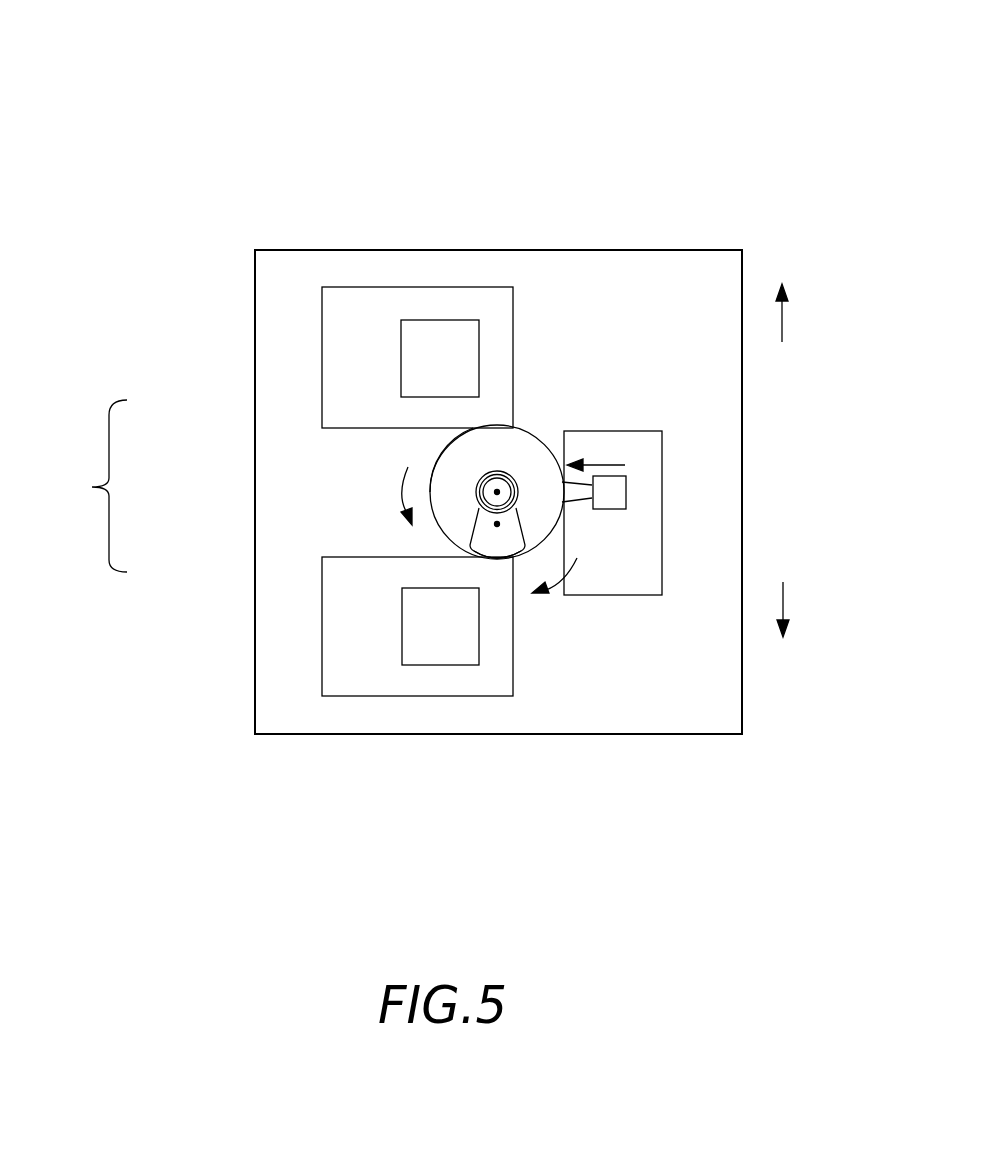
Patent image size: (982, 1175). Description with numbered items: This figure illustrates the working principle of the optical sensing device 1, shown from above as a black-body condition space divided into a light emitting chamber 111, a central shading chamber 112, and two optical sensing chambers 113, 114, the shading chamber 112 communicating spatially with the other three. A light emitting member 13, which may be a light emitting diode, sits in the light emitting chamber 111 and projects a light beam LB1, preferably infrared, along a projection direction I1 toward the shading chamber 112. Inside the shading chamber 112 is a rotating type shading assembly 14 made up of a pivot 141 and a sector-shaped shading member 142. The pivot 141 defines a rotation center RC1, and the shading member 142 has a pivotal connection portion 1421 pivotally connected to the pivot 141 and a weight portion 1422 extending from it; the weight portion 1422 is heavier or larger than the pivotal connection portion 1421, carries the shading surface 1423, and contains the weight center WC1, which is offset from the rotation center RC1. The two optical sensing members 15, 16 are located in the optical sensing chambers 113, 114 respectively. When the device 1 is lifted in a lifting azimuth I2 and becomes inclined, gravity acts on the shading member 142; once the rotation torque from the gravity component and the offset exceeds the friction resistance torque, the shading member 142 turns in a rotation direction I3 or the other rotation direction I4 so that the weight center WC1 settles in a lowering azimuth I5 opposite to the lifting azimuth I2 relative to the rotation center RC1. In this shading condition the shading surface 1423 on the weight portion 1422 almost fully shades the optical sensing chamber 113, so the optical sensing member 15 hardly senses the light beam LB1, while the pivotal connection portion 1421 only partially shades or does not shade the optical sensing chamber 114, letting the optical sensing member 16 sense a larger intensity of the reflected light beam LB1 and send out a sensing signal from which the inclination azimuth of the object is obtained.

The optical sensing device 1 is at (762, 121).
The light emitting chamber 111 is at (664, 432).
The shading chamber 112 is at (470, 450).
The optical sensing chamber 113 is at (365, 662).
The optical sensing chamber 114 is at (342, 360).
The light emitting member 13 is at (620, 493).
The rotating type shading assembly 14 is at (525, 468).
The pivot 141 is at (510, 473).
The shading member 142 is at (79, 486).
The pivotal connection portion 1421 is at (475, 477).
The weight portion 1422 is at (485, 538).
The shading surface 1423 is at (497, 528).
The optical sensing member 15 is at (442, 632).
The optical sensing member 16 is at (420, 343).
The rotation center RC1 is at (498, 471).
The weight center WC1 is at (505, 560).
The light beam LB1 is at (572, 490).
The projection direction I1 is at (596, 450).
The lifting azimuth I2 is at (781, 334).
The rotation direction I3 is at (389, 496).
The rotation direction I4 is at (557, 594).
The lowering azimuth I5 is at (783, 590).